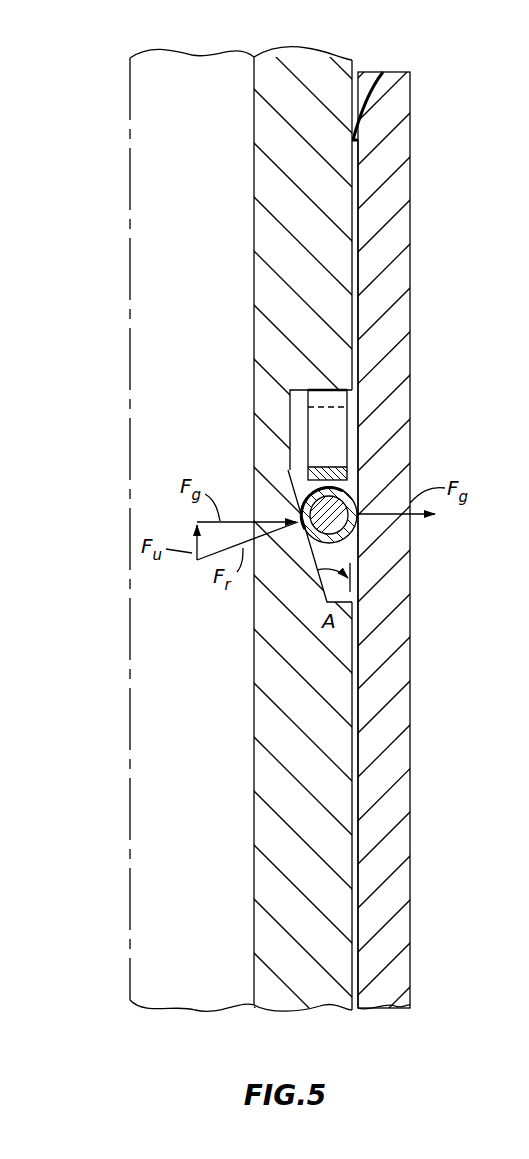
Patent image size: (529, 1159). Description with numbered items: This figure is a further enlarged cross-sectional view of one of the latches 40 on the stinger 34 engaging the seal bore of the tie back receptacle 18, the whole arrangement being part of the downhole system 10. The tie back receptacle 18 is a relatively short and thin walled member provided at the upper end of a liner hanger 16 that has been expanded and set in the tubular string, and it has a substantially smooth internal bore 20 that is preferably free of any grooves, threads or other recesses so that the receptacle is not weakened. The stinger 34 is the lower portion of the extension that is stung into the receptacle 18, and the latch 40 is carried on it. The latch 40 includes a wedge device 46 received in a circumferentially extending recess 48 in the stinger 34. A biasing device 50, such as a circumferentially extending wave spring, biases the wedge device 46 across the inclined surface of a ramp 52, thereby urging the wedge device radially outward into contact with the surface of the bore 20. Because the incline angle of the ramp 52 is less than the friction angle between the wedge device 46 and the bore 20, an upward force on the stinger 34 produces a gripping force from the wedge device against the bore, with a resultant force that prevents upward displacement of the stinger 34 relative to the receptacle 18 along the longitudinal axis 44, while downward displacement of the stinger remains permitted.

The latch assembly 10 is at (414, 46).
The liner hanger 16 is at (414, 789).
The tie back receptacle 18 is at (411, 268).
The internal bore 20 is at (352, 189).
The stinger 34 is at (358, 729).
The latch 40 is at (375, 468).
The longitudinal axis 44 is at (130, 702).
The wedge device 46 is at (360, 537).
The recess 48 is at (296, 426).
The biasing device 50 is at (348, 421).
The ramp 52 is at (313, 549).